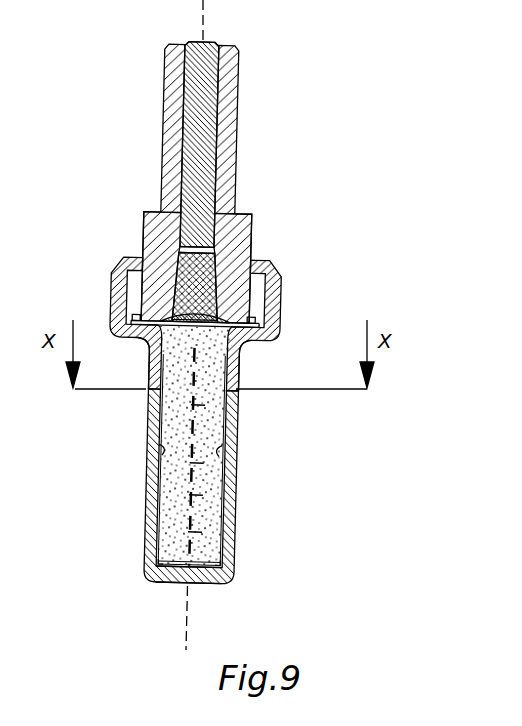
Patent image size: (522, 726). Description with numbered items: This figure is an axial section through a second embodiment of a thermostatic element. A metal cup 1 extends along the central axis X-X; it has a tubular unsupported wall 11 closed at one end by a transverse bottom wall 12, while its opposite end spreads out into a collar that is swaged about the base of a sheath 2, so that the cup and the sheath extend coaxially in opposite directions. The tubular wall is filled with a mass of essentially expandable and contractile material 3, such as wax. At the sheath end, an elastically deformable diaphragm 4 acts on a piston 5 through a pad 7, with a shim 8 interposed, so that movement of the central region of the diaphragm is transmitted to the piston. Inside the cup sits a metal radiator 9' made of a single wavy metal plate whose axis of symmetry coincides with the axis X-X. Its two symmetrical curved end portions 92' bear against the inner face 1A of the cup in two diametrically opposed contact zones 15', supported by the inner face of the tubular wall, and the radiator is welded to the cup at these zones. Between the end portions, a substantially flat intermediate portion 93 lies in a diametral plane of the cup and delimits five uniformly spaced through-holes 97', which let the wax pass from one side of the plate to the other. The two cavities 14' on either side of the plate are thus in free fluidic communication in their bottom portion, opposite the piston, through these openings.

The metal cup 1 is at (104, 298).
The inner face of the cup 1A is at (249, 342).
The sheath 2 is at (158, 148).
The expandable and contractile material 3 is at (192, 439).
The elastically deformable diaphragm 4 is at (253, 237).
The piston 5 is at (192, 40).
The pad 7 is at (250, 212).
The shim 8 is at (218, 149).
The metal radiator 9' is at (143, 459).
The tubular unsupported wall 11 is at (152, 405).
The closed transverse bottom wall 12 is at (172, 585).
The cavities 14' is at (185, 587).
The contact zones 15' is at (187, 465).
The curved end portions 92' is at (150, 546).
The intermediate portion 93 is at (197, 401).
The through-holes 97' is at (249, 468).